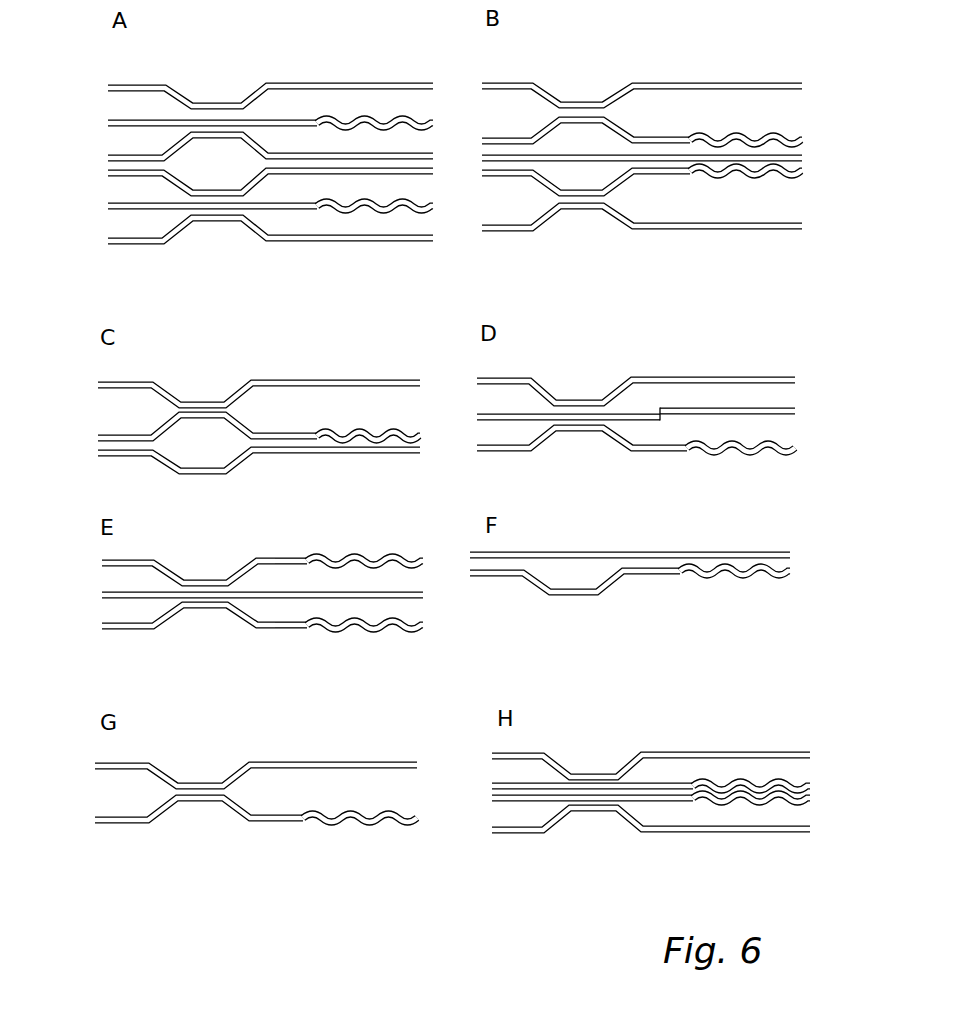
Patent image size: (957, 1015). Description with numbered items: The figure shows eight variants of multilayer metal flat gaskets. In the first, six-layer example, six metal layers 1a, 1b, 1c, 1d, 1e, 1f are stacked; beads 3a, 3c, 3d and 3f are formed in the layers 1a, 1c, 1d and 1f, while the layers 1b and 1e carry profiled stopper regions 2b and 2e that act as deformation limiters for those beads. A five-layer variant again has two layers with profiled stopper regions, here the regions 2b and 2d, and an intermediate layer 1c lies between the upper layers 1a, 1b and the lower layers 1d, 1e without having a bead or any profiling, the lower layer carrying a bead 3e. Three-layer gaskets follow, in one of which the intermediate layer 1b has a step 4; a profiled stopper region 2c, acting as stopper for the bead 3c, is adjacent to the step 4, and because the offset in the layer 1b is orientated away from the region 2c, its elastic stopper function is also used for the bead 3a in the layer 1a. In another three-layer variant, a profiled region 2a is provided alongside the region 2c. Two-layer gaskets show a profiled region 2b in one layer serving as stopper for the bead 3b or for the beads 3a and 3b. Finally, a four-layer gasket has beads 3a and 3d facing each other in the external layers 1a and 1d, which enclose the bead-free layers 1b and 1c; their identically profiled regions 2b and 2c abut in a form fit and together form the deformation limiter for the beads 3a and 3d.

The metal layer 1a is at (108, 90).
The metal layer 1b is at (108, 126).
The metal layer 1c is at (108, 160).
The metal layer 1d is at (108, 177).
The metal layer 1e is at (108, 208).
The metal layer 1f is at (108, 243).
The profiled stopper region 2a is at (350, 558).
The profiled stopper region 2b is at (347, 118).
The profiled stopper region 2c is at (723, 450).
The profiled stopper region 2d is at (727, 170).
The profiled stopper region 2e is at (360, 204).
The bead 3a is at (190, 104).
The bead 3b is at (610, 120).
The bead 3c is at (205, 134).
The bead 3d is at (212, 189).
The bead 3e is at (608, 212).
The bead 3f is at (228, 218).
The step 4 is at (661, 408).